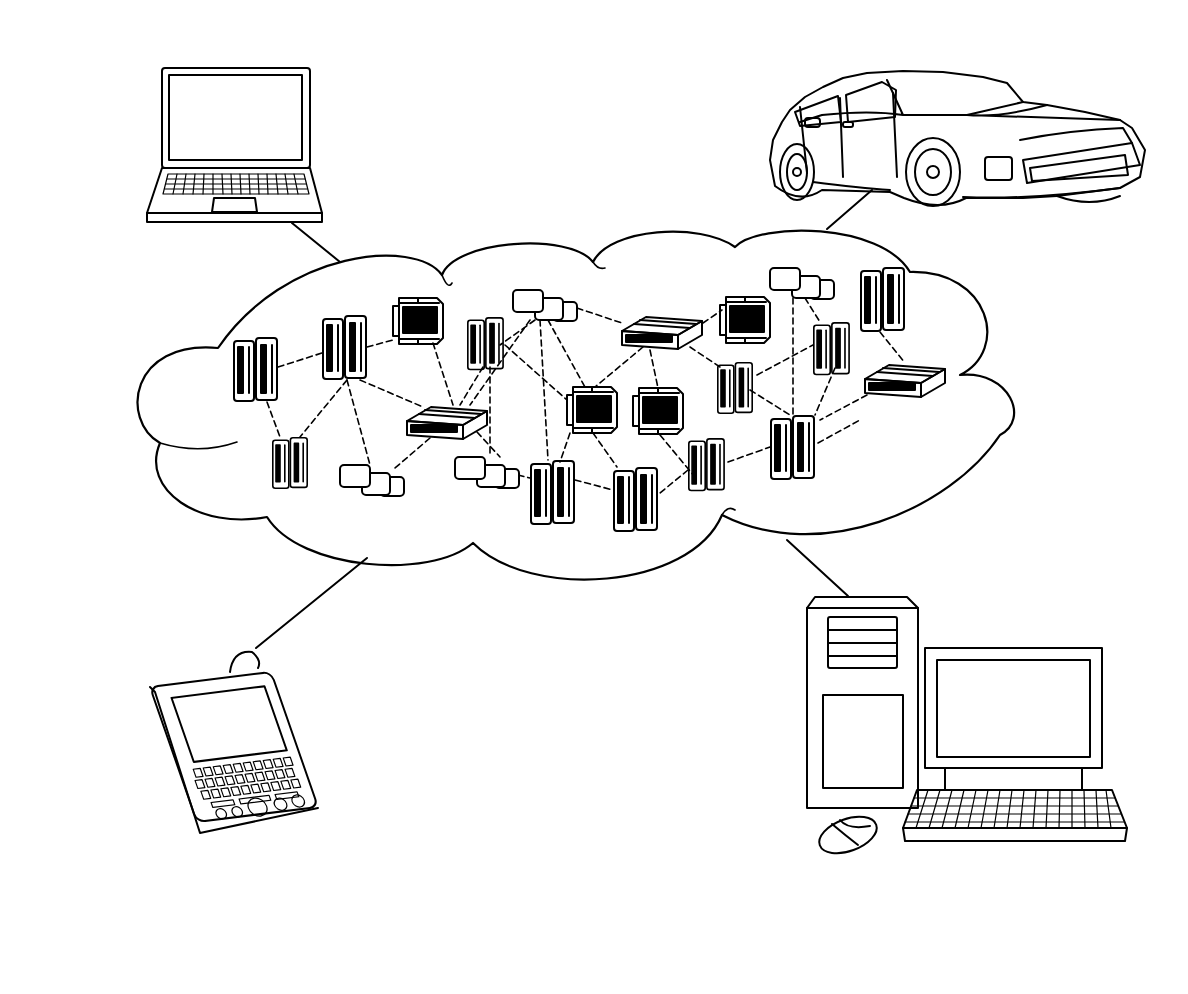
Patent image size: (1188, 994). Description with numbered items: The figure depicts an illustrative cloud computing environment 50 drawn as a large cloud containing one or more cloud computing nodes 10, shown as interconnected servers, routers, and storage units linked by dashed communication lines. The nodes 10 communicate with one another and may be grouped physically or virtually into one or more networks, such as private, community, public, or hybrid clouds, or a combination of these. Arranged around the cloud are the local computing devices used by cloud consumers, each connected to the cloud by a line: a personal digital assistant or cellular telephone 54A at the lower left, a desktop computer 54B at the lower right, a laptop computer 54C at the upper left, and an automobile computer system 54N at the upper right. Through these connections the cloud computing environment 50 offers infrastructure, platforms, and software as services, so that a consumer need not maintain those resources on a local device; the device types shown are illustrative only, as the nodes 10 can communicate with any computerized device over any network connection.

The cloud computing nodes 10 is at (641, 484).
The cloud computing environment 50 is at (1010, 382).
The personal digital assistant (PDA) or cellular telephone 54A is at (298, 738).
The desktop computer 54B is at (1010, 650).
The laptop computer 54C is at (308, 125).
The automobile computer system 54N is at (776, 139).